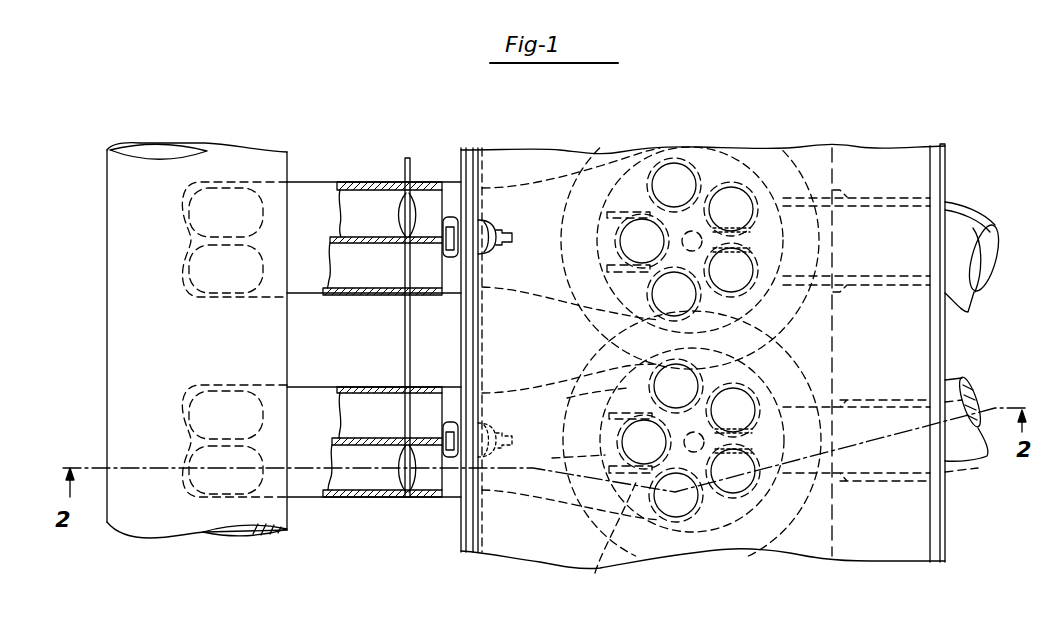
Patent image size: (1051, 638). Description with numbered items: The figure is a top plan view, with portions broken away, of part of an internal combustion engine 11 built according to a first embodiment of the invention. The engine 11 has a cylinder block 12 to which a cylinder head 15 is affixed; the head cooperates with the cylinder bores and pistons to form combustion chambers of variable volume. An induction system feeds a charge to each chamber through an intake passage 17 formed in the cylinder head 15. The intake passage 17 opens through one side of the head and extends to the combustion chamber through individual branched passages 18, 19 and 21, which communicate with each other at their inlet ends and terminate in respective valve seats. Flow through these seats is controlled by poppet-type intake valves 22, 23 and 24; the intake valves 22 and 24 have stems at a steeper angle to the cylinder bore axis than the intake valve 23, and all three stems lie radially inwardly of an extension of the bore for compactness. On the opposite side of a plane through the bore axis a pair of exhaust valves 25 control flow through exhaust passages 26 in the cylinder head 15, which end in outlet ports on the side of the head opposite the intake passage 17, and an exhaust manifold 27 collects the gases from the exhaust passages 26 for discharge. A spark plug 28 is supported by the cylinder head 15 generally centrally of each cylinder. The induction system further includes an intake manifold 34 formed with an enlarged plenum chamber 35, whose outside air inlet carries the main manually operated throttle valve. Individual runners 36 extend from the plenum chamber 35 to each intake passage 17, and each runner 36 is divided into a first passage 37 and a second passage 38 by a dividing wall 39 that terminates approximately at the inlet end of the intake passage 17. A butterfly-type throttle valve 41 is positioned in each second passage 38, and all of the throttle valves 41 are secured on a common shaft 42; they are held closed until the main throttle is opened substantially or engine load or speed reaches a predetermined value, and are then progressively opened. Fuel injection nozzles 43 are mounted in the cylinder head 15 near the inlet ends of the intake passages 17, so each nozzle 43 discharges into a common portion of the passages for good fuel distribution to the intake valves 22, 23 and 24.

The internal combustion engine 11 is at (950, 148).
The cylinder block 12 is at (823, 143).
The cylinder head 15 is at (837, 160).
The intake passage 17 is at (540, 185).
The branched passage 18 is at (596, 574).
The branched passage 19 is at (553, 458).
The branched passage 21 is at (570, 398).
The intake valve 22 is at (637, 316).
The intake valve 23 is at (614, 240).
The intake valve 24 is at (657, 155).
The exhaust valves 25 is at (745, 145).
The exhaust passages 26 is at (843, 410).
The exhaust manifold 27 is at (967, 232).
The spark plug 28 is at (716, 226).
The intake manifold 34 is at (293, 170).
The plenum chamber 35 is at (107, 330).
The runner 36 is at (327, 295).
The first passage 37 is at (352, 274).
The second passage 38 is at (352, 221).
The dividing wall 39 is at (341, 233).
The throttle valve 41 is at (400, 197).
The common shaft 42 is at (405, 158).
The fuel injection nozzle 43 is at (451, 216).